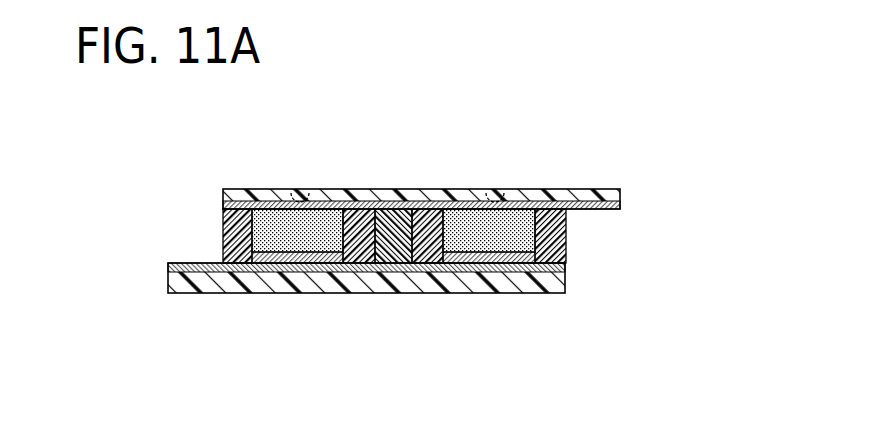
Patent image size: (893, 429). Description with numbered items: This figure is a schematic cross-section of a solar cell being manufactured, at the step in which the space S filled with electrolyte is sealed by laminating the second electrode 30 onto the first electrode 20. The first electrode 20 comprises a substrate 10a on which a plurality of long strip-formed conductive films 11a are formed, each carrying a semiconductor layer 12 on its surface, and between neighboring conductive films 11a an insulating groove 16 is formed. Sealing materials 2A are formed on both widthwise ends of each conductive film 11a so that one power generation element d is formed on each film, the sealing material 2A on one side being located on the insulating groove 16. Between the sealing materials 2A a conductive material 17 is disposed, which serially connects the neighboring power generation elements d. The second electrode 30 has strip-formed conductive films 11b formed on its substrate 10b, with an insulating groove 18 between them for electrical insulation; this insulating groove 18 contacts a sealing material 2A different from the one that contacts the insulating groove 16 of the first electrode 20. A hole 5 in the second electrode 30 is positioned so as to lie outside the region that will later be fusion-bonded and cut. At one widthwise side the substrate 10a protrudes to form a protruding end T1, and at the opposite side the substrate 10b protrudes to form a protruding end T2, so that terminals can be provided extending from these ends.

The second electrode 30 is at (624, 197).
The first electrode 20 is at (571, 283).
The substrate 10a is at (210, 272).
The substrate 10b is at (560, 203).
The conductive film 11a is at (268, 272).
The conductive film 11b is at (334, 205).
The semiconductor layer 12 is at (311, 260).
The insulating groove 16 is at (352, 262).
The conductive material 17 is at (394, 215).
The insulating groove 18 is at (227, 207).
The sealing material 2A is at (228, 222).
The hole 5 is at (300, 200).
The space S is at (271, 216).
The power generation element d is at (288, 293).
The protruding end T1 is at (192, 268).
The protruding end T2 is at (605, 206).